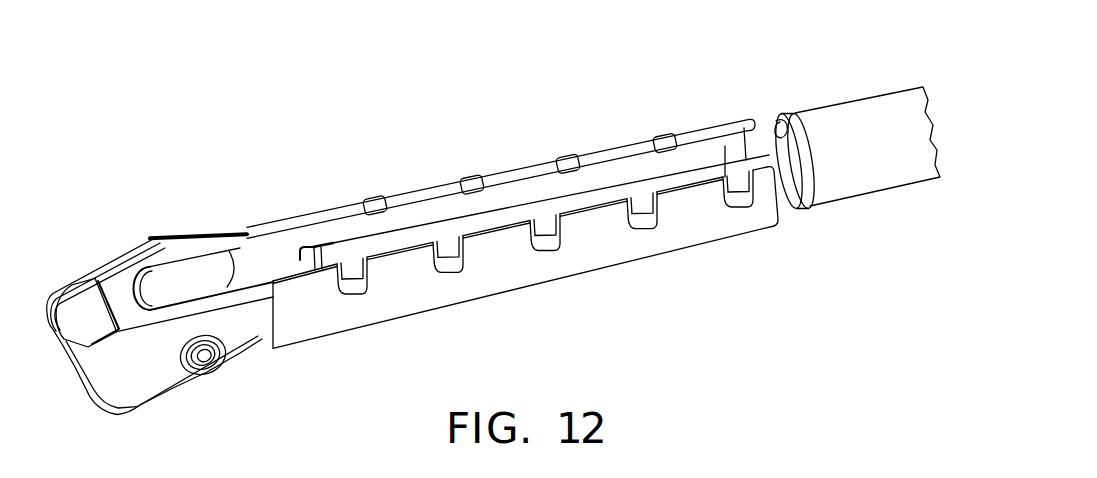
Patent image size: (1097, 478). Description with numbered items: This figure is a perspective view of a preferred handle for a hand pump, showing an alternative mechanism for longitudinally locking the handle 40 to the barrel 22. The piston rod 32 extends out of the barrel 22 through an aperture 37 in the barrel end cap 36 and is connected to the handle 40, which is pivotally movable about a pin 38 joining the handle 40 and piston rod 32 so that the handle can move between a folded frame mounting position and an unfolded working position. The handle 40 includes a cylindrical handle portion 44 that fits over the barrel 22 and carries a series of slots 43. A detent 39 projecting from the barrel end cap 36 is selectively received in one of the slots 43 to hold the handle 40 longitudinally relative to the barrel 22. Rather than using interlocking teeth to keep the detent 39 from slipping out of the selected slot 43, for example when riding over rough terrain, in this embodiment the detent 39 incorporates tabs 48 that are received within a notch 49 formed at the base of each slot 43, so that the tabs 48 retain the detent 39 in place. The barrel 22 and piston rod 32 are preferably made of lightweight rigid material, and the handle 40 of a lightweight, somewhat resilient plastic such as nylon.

The handle 40 is at (443, 74).
The piston rod 32 is at (443, 237).
The slots 43 is at (372, 203).
The notch 49 is at (347, 302).
The cylindrical handle portion 44 is at (560, 268).
The pin 38 is at (209, 360).
The tabs 48 is at (778, 141).
The barrel 22 is at (893, 95).
The detent 39 is at (800, 134).
The barrel end cap 36 is at (803, 180).
The aperture 37 is at (812, 206).